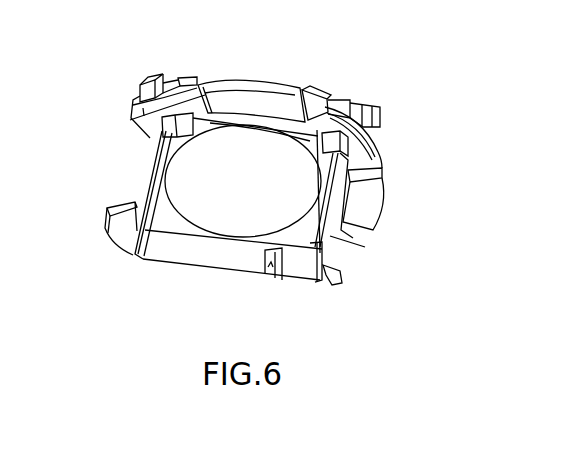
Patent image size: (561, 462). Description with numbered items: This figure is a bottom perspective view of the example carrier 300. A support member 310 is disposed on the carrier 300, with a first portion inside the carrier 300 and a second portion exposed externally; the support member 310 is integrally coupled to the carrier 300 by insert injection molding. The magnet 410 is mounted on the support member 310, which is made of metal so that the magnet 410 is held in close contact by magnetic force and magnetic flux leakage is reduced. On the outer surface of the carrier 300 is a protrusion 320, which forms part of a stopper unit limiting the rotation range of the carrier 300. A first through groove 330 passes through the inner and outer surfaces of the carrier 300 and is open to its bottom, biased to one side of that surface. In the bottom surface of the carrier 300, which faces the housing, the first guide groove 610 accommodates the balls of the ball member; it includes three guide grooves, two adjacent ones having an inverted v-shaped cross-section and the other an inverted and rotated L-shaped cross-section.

The carrier 300 is at (162, 246).
The support member 310 is at (308, 105).
The protrusion 320 is at (145, 88).
The first through groove 330 is at (277, 284).
The magnet 410 is at (262, 105).
The first guide groove 610 is at (144, 120).